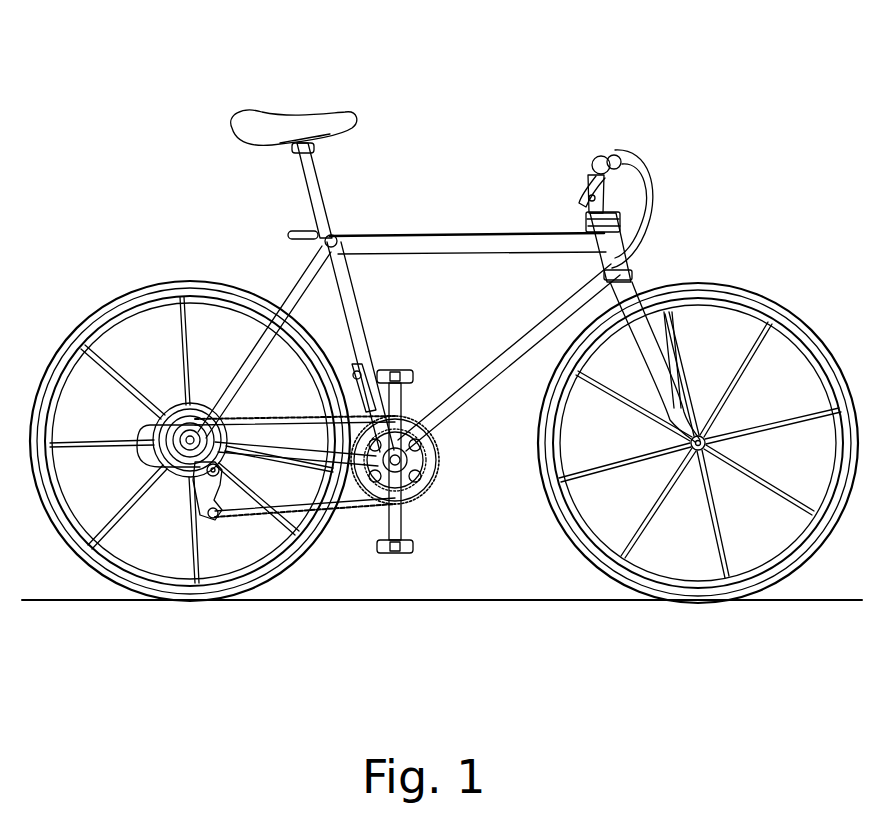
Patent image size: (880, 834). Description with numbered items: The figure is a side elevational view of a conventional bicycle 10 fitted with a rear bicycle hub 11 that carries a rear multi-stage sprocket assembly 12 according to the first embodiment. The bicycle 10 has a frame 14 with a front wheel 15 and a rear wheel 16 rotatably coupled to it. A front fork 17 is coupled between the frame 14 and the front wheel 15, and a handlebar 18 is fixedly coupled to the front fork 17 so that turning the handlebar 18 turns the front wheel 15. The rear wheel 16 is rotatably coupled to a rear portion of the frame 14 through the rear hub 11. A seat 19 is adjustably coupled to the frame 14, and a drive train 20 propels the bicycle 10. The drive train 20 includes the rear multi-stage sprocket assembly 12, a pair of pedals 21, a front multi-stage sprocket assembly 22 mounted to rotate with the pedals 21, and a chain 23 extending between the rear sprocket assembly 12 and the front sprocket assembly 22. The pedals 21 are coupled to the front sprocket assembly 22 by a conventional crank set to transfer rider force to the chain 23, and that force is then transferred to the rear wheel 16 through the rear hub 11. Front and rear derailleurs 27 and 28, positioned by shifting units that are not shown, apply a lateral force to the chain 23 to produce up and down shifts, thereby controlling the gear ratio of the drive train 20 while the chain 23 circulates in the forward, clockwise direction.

The bicycle 10 is at (658, 114).
The rear bicycle hub 11 is at (158, 394).
The rear multi-stage sprocket assembly 12 is at (188, 413).
The frame 14 is at (458, 246).
The front wheel 15 is at (754, 281).
The rear wheel 16 is at (150, 268).
The front fork 17 is at (640, 272).
The handlebar 18 is at (598, 156).
The seat 19 is at (297, 112).
The drive train 20 is at (434, 524).
The pedals 21 is at (402, 370).
The front multi-stage sprocket assembly 22 is at (440, 456).
The chain 23 is at (356, 520).
The front derailleur 27 is at (352, 385).
The rear derailleur 28 is at (210, 510).